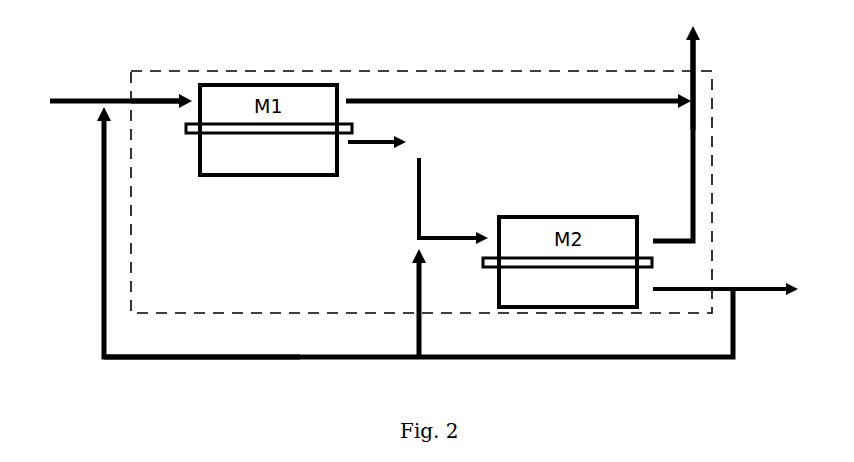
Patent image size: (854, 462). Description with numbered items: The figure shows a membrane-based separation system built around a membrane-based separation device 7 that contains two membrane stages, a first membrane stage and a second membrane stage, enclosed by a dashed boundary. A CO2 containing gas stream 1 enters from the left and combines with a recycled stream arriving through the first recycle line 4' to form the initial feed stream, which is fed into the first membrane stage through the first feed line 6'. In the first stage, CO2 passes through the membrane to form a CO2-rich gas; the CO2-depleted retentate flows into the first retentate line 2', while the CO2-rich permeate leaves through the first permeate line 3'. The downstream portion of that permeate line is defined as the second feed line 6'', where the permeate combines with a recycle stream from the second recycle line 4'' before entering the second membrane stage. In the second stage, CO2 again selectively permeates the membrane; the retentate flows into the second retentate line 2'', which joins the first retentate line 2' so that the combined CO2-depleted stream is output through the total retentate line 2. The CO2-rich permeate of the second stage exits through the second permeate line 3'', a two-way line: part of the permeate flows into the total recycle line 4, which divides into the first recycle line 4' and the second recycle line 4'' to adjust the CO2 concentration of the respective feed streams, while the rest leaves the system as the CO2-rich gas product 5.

The CO2 containing gas stream 1 is at (114, 99).
The total CO2-depleted retentate line 2 is at (702, 78).
The first retentate line 2' is at (518, 92).
The second retentate line 2'' is at (673, 139).
The first permeate line 3' is at (390, 147).
The second permeate line 3'' is at (725, 279).
The total recycle line 4 is at (418, 339).
The first recycle line 4' is at (198, 253).
The second recycle line 4'' is at (405, 303).
The CO2-rich gas product 5 is at (781, 296).
The first feed line 6' is at (156, 89).
The second feed line 6'' is at (453, 201).
The membrane-based separation device 7 is at (395, 71).